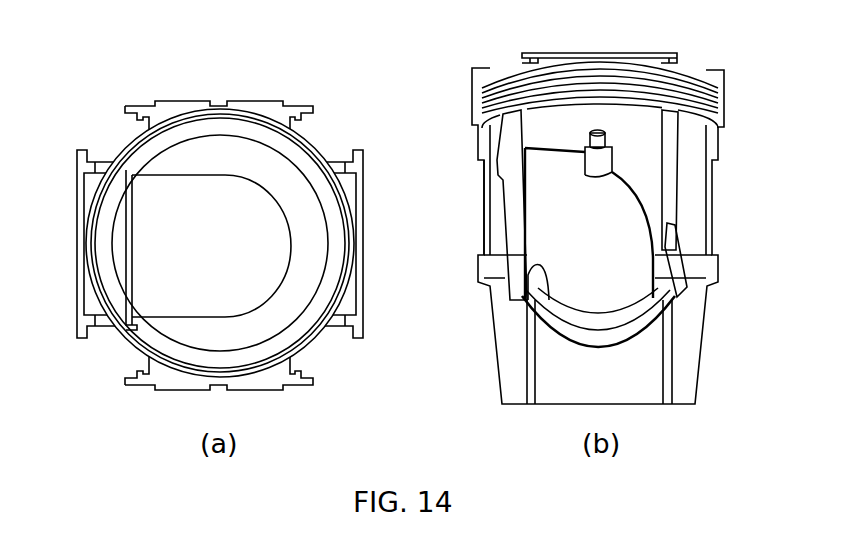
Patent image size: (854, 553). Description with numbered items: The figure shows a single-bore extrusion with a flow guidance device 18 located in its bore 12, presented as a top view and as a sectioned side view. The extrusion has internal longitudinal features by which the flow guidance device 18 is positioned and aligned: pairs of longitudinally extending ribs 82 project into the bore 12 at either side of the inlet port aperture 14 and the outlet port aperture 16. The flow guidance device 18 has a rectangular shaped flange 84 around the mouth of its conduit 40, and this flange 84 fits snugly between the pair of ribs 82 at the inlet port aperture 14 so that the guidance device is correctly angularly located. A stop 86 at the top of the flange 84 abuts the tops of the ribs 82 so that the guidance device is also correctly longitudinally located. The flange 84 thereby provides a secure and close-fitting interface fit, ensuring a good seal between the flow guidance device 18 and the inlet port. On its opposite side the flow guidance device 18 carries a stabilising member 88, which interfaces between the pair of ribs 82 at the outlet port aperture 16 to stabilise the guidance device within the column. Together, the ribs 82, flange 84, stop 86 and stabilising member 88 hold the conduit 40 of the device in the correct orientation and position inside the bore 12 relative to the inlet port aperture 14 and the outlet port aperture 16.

The bore 12 is at (233, 128).
The inlet port aperture 14 is at (497, 195).
The outlet port aperture 16 is at (695, 193).
The flow guidance device 18 is at (265, 165).
The conduit 40 is at (186, 195).
The longitudinally extending ribs 82 is at (126, 150).
The rectangular shaped flange 84 is at (510, 242).
The stop 86 is at (110, 252).
The stabilising member 88 is at (685, 282).